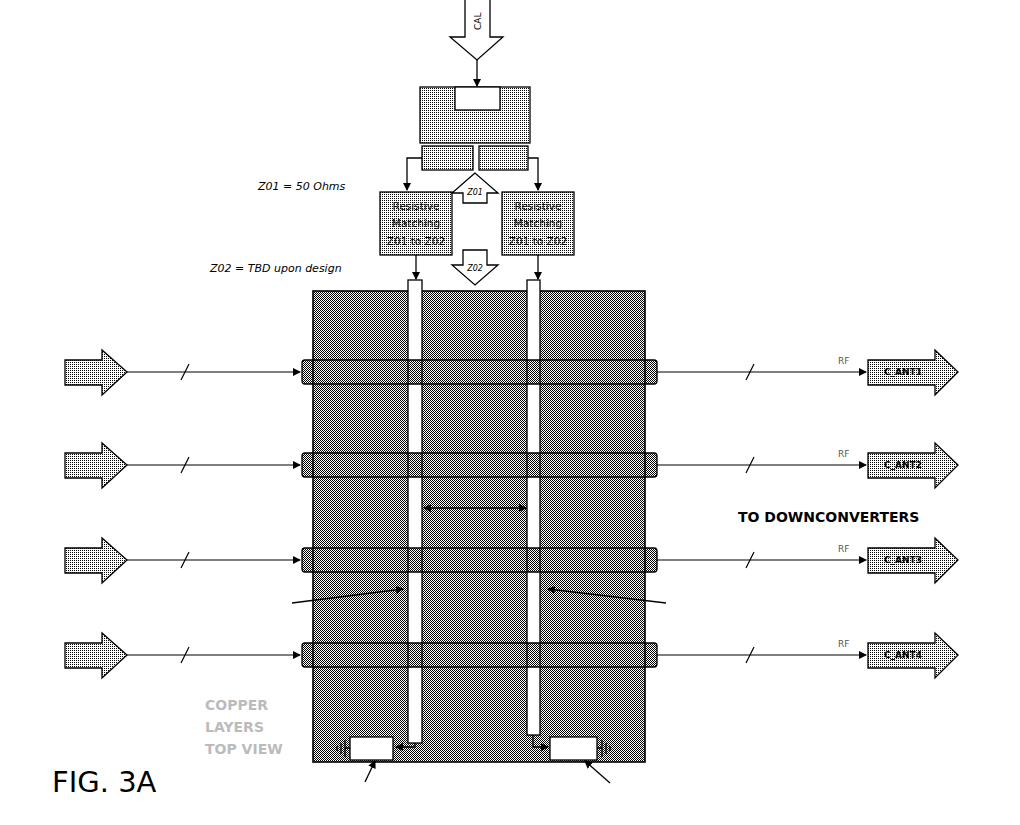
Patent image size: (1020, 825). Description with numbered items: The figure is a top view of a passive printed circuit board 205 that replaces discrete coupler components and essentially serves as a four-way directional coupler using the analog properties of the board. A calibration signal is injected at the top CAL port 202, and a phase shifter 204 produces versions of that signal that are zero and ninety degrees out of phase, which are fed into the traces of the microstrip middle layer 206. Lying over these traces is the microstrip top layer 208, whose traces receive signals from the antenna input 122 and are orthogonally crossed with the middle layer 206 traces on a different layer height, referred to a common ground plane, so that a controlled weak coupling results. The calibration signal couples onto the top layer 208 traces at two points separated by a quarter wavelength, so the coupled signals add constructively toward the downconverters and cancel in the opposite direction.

The antenna input 122 is at (171, 512).
The CAL port 202 is at (496, 85).
The phase shifter 204 is at (532, 122).
The passive printed circuit board 205 is at (641, 296).
The middle layer 206 is at (501, 540).
The top layer 208 is at (653, 372).